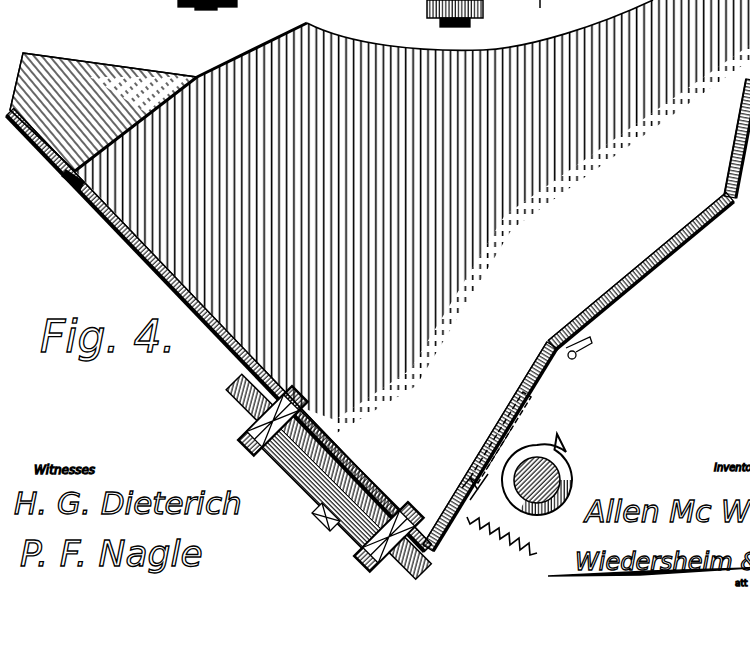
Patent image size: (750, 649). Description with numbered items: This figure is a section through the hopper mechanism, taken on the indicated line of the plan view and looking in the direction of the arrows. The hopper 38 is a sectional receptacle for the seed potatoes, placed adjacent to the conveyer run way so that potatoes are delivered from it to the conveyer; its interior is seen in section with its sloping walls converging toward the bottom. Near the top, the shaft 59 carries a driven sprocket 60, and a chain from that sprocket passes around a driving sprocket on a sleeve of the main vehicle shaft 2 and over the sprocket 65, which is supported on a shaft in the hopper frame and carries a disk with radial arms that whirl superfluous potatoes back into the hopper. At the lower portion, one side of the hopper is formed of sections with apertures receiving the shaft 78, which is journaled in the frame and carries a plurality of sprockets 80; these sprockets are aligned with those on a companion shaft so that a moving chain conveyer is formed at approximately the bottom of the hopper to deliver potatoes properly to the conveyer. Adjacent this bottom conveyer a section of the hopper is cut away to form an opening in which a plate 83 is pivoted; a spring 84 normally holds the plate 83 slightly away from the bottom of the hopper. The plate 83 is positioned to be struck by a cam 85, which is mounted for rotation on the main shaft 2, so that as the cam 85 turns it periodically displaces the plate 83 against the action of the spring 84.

The hopper 38 is at (412, 217).
The shaft 59 is at (440, 23).
The driven sprocket 60 is at (529, 13).
The sprocket 65 is at (221, 11).
The shaft 78 is at (234, 382).
The sprockets 80 is at (277, 492).
The plate 83 is at (533, 421).
The spring 84 is at (499, 524).
The cam 85 is at (557, 460).
The main vehicle shaft 2 is at (562, 472).